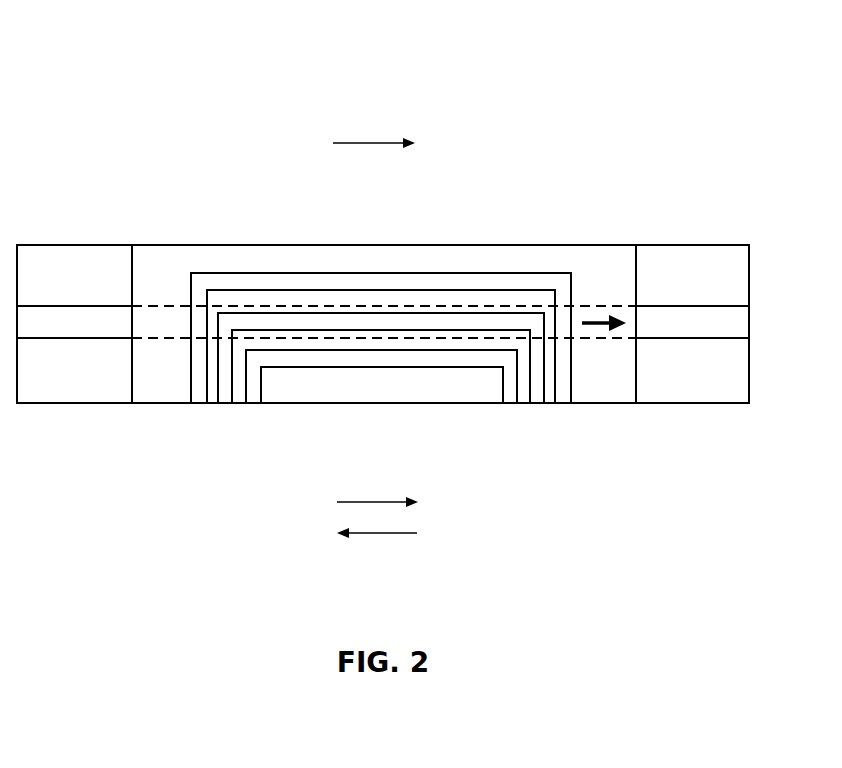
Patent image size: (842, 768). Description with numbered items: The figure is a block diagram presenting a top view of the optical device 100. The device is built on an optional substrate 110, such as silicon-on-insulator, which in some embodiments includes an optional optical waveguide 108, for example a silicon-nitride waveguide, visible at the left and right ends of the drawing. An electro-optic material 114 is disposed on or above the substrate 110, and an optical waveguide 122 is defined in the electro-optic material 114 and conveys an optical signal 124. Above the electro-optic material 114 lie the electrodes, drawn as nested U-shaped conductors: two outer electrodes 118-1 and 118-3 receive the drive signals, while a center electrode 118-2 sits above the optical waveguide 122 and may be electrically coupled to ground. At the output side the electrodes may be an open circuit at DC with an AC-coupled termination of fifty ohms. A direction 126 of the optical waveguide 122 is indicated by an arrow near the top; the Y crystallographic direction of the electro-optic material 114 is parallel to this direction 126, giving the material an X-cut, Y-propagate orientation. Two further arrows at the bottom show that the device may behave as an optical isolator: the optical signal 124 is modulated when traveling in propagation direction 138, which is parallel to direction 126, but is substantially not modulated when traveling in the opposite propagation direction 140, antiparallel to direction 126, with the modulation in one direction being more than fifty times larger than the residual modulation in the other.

The optical device 100 is at (158, 67).
The optical waveguide 108 is at (702, 322).
The substrate 110 is at (717, 370).
The electro-optic material 114 is at (182, 268).
The outer electrode 118-1 is at (228, 283).
The center electrode 118-2 is at (388, 322).
The outer electrode 118-3 is at (430, 358).
The optical waveguide 122 is at (590, 312).
The optical signal 124 is at (602, 325).
The direction 126 is at (377, 143).
The propagation direction 138 is at (387, 502).
The propagation direction 140 is at (373, 533).